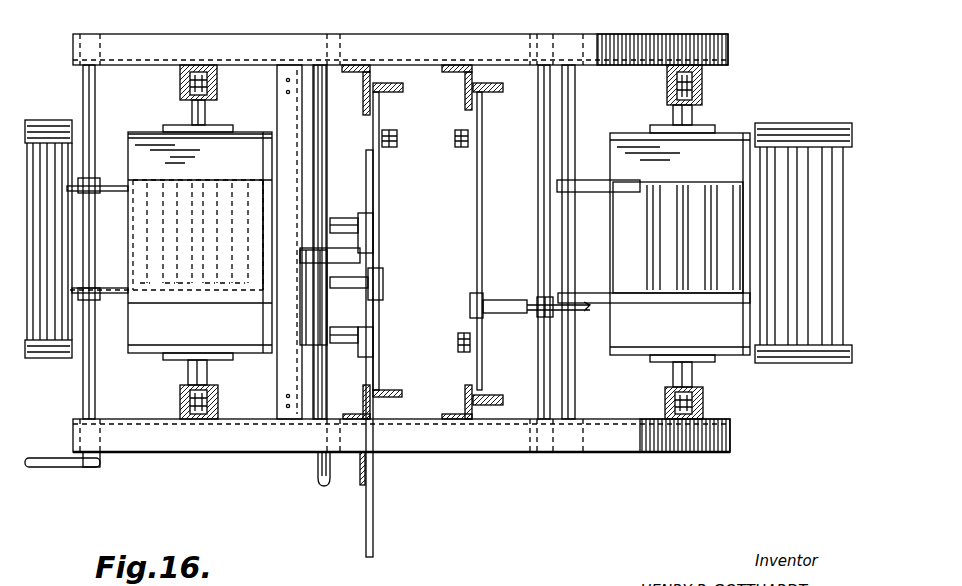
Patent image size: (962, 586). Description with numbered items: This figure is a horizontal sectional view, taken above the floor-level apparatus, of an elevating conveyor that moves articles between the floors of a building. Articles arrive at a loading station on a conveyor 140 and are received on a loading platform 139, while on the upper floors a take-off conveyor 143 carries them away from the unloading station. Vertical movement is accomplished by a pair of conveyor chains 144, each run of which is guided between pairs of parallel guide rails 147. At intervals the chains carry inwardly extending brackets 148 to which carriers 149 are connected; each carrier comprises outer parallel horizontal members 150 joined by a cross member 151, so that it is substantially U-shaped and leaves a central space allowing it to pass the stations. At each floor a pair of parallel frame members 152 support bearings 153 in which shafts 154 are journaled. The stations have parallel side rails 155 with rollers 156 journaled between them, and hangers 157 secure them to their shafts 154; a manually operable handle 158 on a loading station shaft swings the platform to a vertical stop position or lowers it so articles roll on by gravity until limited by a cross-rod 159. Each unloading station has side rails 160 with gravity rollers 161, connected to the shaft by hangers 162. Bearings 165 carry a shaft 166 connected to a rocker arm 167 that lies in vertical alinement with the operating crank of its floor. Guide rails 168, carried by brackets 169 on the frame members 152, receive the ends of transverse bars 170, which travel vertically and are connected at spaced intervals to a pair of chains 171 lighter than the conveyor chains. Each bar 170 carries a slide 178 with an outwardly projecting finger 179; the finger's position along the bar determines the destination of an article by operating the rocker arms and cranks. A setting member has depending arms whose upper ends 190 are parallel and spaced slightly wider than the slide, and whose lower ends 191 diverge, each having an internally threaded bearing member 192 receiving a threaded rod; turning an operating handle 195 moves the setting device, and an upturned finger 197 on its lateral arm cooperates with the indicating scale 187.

The loading platform 139 is at (125, 256).
The conveyor 140 is at (51, 114).
The take-off conveyor 143 is at (822, 117).
The conveyor chains 144 is at (218, 400).
The guide rails 147 is at (218, 86).
The brackets 148 is at (207, 112).
The carriers 149 is at (149, 126).
The outer parallel horizontal members 150 is at (255, 127).
The cross member 151 is at (322, 190).
The frame members 152 is at (438, 35).
The bearings 153 is at (110, 50).
The shafts 154 is at (97, 98).
The side rails 155 is at (64, 213).
The rollers 156 is at (133, 268).
The hangers 157 is at (100, 178).
The handle 158 is at (66, 470).
The cross-rod 159 is at (236, 192).
The side rails 160 is at (669, 185).
The gravity rollers 161 is at (622, 265).
The hangers 162 is at (578, 178).
The bearings 165 is at (488, 400).
The shaft 166 is at (540, 368).
The rocker arm 167 is at (584, 312).
The guide rails 168 is at (495, 95).
The brackets 169 is at (456, 73).
The transverse bars 170 is at (381, 192).
The chains 171 is at (397, 140).
The slide 178 is at (384, 278).
The finger 179 is at (360, 285).
The indicating scale 187 is at (366, 530).
The parallel upper ends of depending arms 190 is at (350, 263).
The diverging lower ends of arms 191 is at (374, 243).
The internally threaded bearing member 192 is at (342, 218).
The operating handle 195 is at (317, 478).
The finger 197 is at (359, 482).